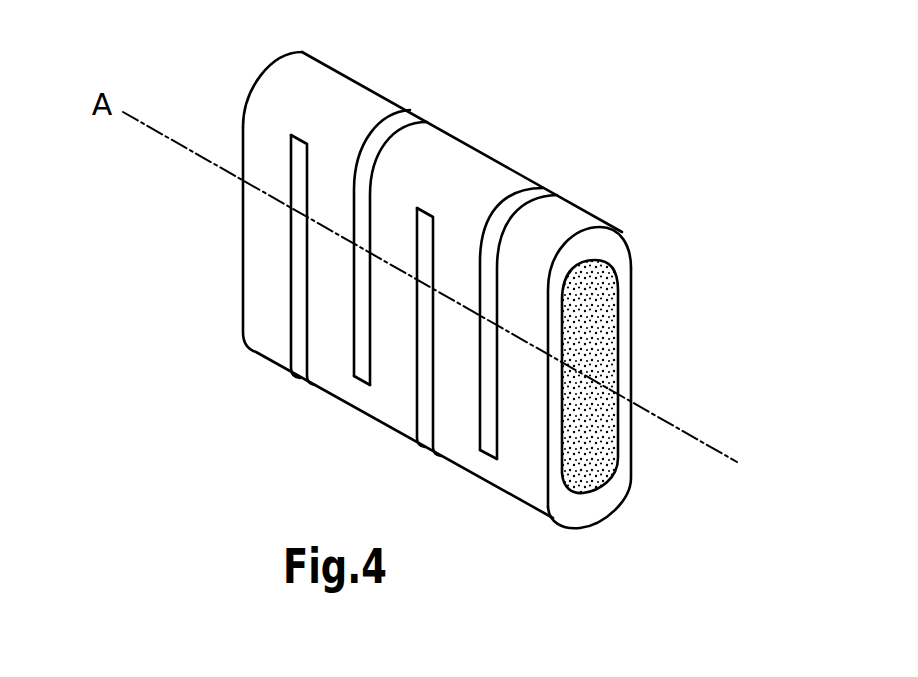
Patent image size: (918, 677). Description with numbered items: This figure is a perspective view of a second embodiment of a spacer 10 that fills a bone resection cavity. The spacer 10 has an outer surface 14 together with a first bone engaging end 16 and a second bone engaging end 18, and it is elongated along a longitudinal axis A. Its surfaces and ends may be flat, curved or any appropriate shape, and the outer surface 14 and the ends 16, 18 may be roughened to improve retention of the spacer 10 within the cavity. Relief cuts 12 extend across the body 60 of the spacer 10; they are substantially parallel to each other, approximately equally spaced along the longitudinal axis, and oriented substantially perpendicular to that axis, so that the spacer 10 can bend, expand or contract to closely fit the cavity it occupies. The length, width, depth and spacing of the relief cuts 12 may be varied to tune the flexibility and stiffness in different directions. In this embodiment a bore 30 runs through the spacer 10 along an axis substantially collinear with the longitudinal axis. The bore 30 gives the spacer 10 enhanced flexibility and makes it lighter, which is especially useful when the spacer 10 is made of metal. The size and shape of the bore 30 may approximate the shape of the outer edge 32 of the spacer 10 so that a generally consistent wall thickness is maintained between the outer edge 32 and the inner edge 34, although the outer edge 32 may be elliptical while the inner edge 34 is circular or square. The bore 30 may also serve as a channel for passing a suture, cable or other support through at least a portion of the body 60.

The spacer 10 is at (612, 92).
The relief cuts 12 is at (391, 134).
The outer surface 14 is at (373, 400).
The first bone engaging end 16 is at (608, 245).
The second bone engaging end 18 is at (240, 128).
The bore 30 is at (597, 353).
The outer edge 32 is at (632, 327).
The inner edge 34 is at (612, 465).
The body 60 is at (452, 363).